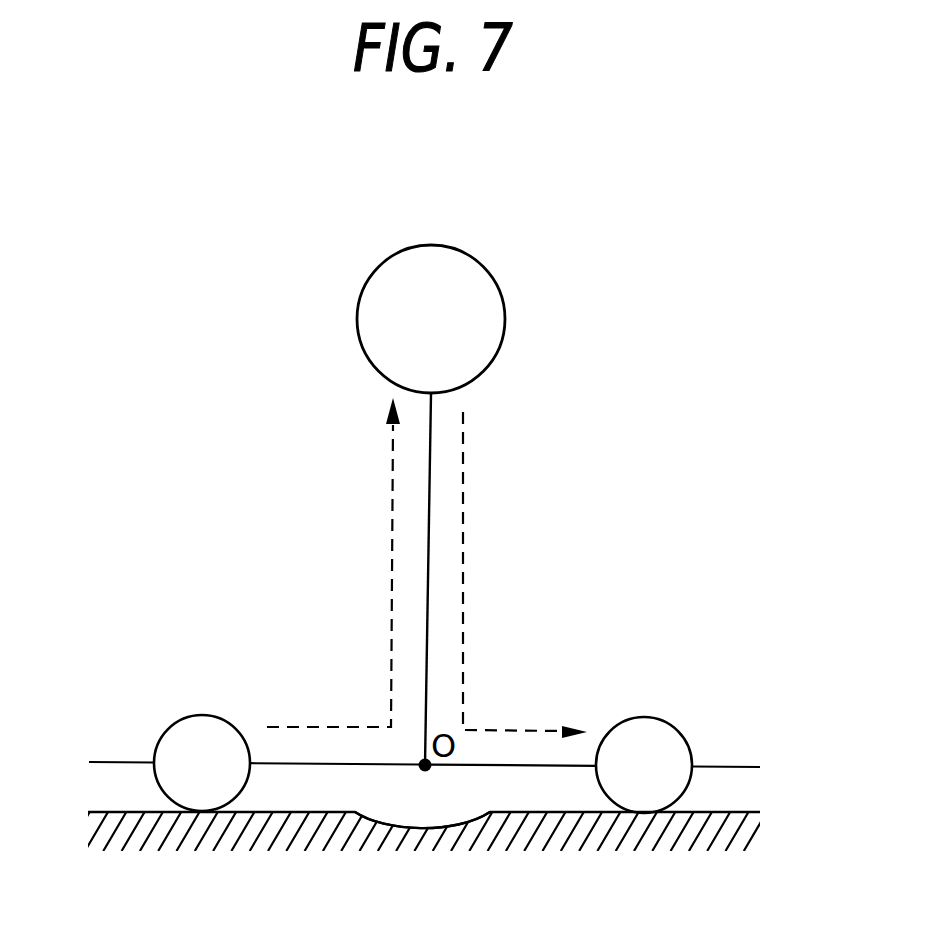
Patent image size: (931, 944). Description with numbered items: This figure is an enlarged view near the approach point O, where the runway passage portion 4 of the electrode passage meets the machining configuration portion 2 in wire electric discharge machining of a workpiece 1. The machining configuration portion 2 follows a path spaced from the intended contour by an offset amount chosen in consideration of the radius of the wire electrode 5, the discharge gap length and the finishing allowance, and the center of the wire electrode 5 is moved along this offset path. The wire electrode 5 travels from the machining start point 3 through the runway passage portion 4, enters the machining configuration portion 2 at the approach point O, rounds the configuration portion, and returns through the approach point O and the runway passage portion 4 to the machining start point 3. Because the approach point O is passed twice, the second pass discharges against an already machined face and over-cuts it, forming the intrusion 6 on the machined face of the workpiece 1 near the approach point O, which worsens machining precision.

The workpiece 1 is at (317, 842).
The machining configuration portion 2 is at (730, 767).
The machining start point 3 is at (492, 327).
The runway passage portion 4 is at (429, 518).
The wire electrode 5 is at (203, 716).
The intrusion 6 is at (462, 817).